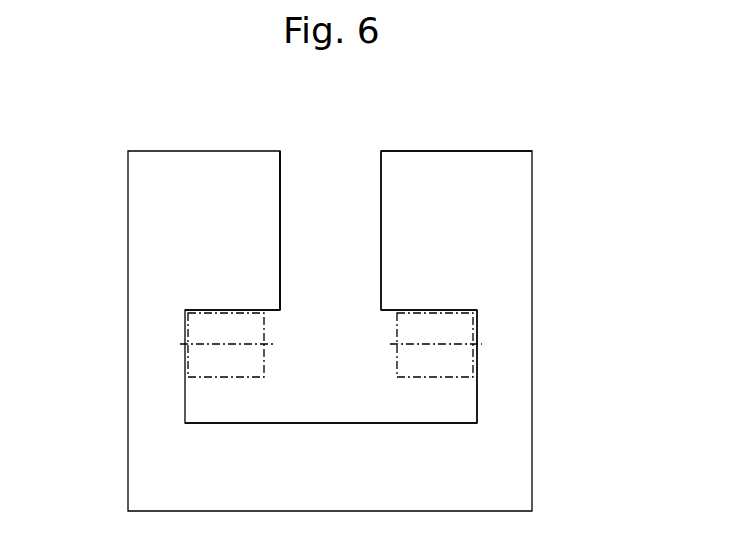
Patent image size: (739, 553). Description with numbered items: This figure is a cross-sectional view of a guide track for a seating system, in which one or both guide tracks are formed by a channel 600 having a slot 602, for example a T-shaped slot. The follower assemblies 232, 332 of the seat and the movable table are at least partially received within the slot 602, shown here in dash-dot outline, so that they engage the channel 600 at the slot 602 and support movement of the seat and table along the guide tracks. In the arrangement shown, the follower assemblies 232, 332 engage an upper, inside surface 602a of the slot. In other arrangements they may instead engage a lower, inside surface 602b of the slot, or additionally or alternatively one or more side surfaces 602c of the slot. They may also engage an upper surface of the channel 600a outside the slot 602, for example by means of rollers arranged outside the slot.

The channel 600 is at (560, 195).
The upper surface of the channel 600a is at (462, 151).
The slot 602 is at (343, 196).
The upper inside surface of the slot 602a is at (213, 310).
The lower inside surface of the slot 602b is at (220, 423).
The side surface of the slot 602c is at (280, 185).
The follower assembly 232 is at (242, 378).
The follower assembly 332 is at (408, 362).